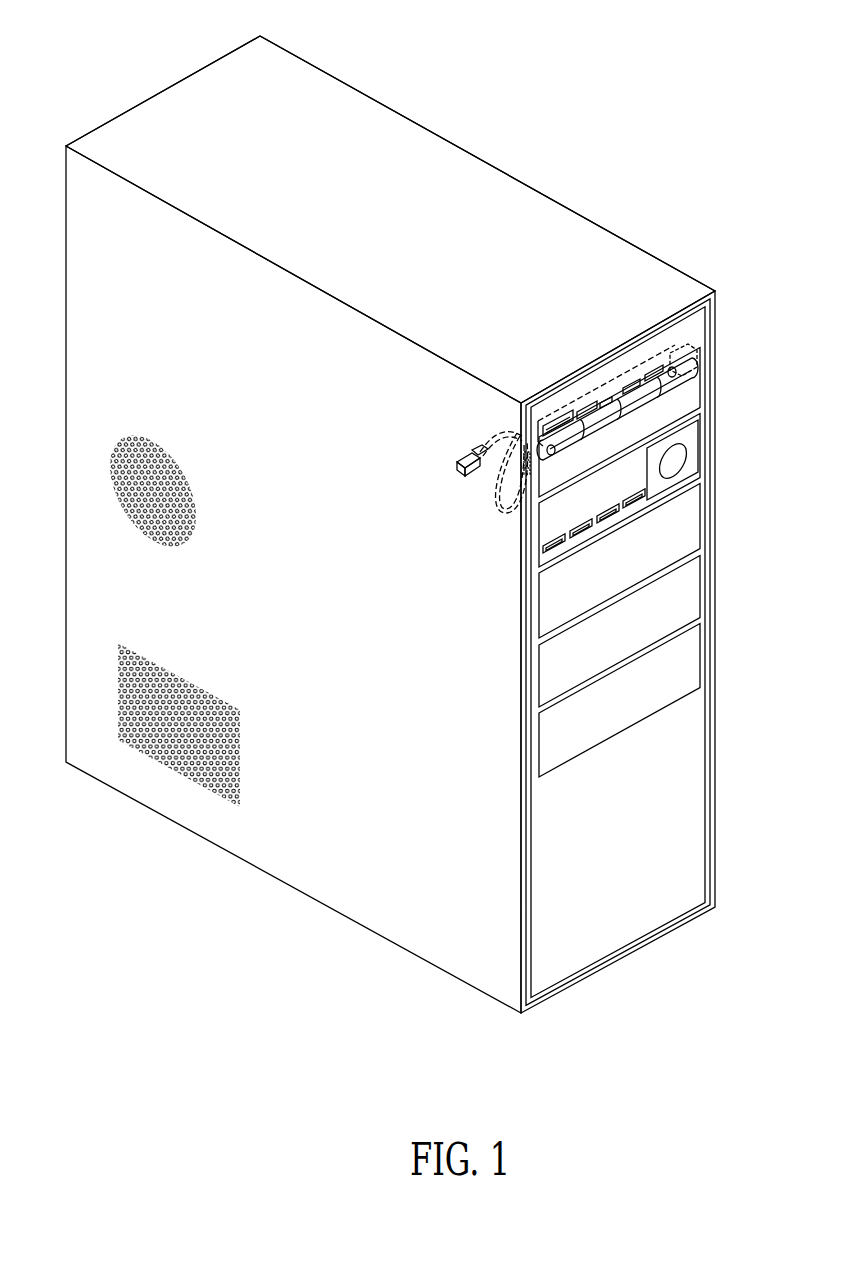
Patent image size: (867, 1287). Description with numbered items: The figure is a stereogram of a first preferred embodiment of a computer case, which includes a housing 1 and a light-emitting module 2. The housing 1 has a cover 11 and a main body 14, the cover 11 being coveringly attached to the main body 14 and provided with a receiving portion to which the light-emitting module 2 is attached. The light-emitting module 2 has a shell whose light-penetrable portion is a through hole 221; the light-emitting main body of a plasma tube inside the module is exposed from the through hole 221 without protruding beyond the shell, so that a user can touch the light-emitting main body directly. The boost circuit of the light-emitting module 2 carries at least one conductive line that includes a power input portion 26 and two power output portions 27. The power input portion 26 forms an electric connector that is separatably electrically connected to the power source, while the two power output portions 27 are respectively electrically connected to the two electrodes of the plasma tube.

The housing 1 is at (154, 76).
The main body 14 is at (402, 145).
The cover 11 is at (658, 908).
The light-emitting module 2 is at (653, 336).
The through hole 221 is at (703, 370).
The power input portion 26 is at (475, 435).
The power output portions 27 is at (497, 450).